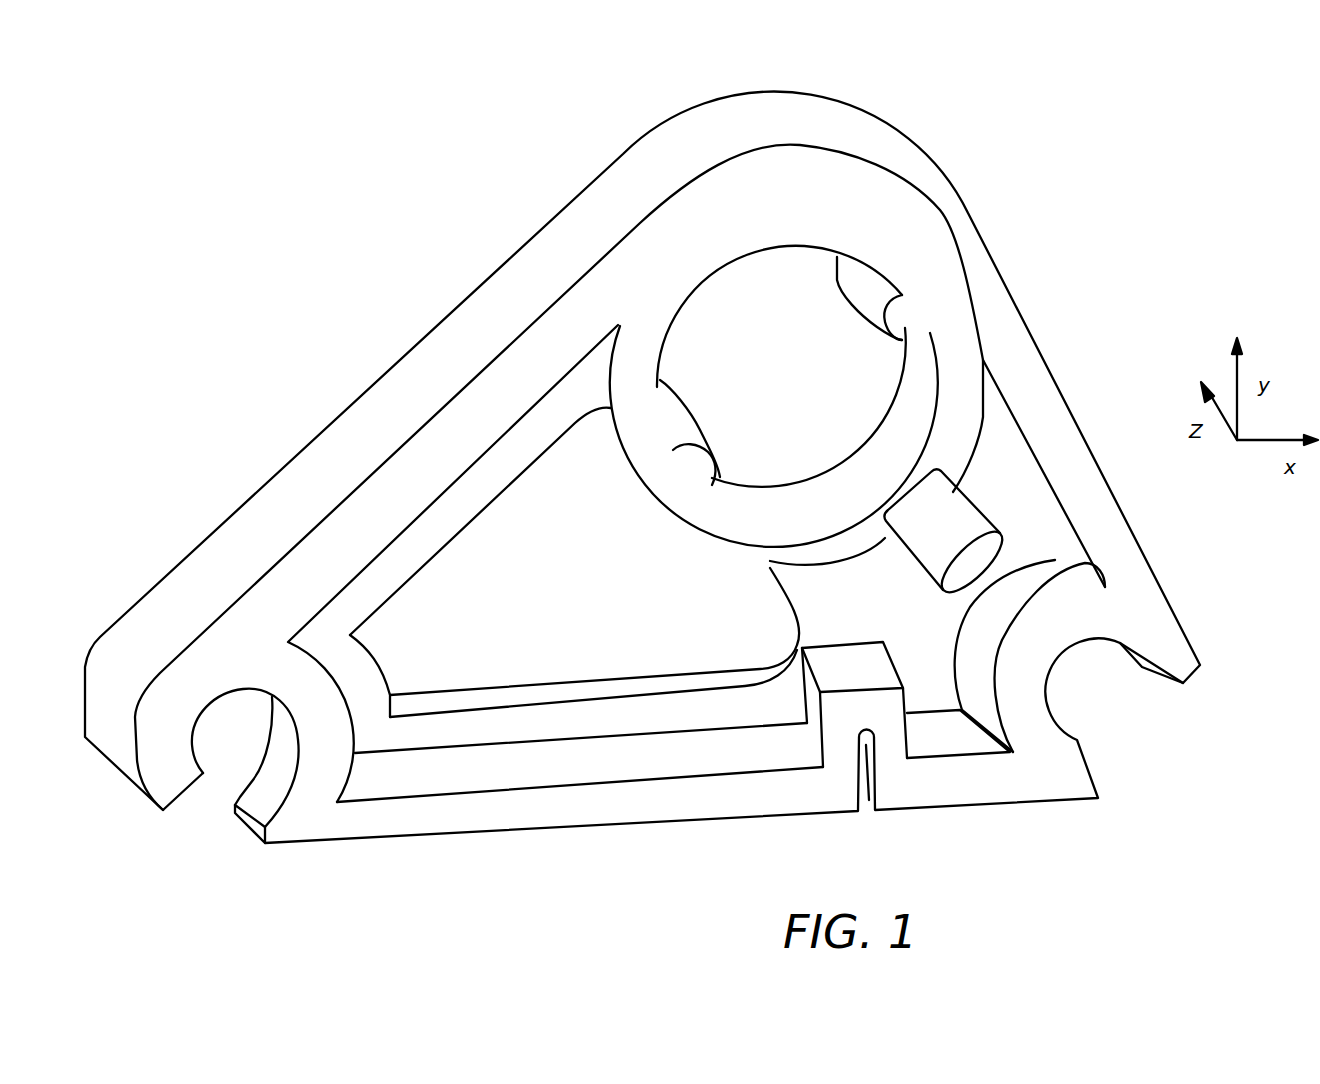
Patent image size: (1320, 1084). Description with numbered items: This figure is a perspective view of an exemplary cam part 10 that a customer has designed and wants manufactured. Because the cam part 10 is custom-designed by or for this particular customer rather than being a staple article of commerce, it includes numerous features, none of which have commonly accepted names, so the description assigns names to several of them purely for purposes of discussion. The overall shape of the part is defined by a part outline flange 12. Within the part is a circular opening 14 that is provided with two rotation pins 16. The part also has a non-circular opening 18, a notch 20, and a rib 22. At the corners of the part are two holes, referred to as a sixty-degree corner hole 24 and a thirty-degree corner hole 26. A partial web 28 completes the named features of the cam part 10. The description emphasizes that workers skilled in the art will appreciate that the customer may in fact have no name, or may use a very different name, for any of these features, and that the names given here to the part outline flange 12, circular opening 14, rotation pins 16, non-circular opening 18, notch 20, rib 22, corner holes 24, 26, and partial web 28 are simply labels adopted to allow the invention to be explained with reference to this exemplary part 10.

The cam part 10 is at (307, 250).
The part outline flange 12 is at (391, 487).
The circular opening 14 is at (733, 331).
The rotation pins 16 is at (902, 337).
The non-circular opening 18 is at (550, 571).
The notch 20 is at (870, 763).
The rib 22 is at (950, 517).
The 60° corner hole 24 is at (1097, 700).
The 30° corner hole 26 is at (233, 760).
The partial web 28 is at (530, 722).